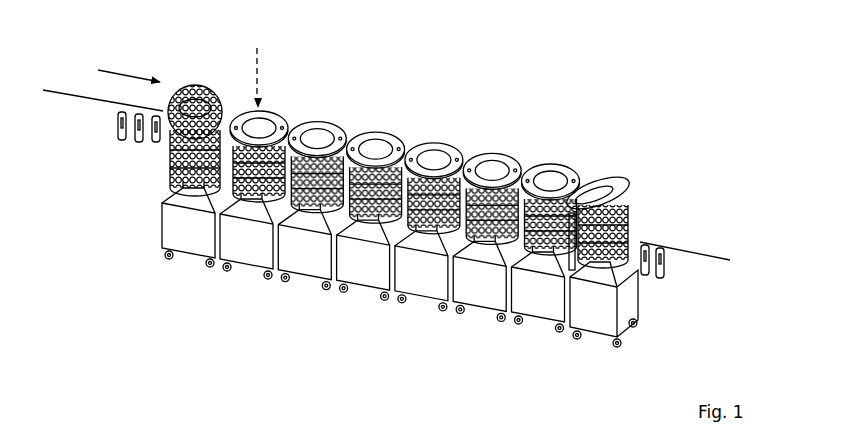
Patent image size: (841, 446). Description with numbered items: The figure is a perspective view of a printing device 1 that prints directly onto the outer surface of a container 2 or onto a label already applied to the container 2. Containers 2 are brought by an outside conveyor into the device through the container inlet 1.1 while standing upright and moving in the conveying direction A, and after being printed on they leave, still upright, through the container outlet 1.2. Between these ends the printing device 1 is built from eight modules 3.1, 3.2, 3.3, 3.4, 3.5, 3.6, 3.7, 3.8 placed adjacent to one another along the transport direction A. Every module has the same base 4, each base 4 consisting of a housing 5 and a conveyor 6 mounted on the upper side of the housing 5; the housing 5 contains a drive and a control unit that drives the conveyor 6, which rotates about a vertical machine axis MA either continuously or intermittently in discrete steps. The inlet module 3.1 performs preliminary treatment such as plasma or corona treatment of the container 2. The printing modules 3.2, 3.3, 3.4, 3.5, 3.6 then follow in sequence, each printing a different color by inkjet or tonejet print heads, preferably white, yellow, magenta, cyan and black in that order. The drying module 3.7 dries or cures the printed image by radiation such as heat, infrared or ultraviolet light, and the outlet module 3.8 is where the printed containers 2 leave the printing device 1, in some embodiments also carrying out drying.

The printing device 1 is at (597, 100).
The container inlet 1.1 is at (125, 156).
The container outlet 1.2 is at (654, 290).
The container 2 is at (118, 128).
The inlet module 3.1 is at (193, 83).
The printing module 3.2 is at (264, 106).
The printing module 3.3 is at (319, 119).
The printing module 3.4 is at (378, 128).
The printing module 3.5 is at (441, 139).
The printing module 3.6 is at (496, 152).
The drying module 3.7 is at (554, 164).
The outlet module 3.8 is at (615, 177).
The base 4 is at (170, 187).
The housing 5 is at (178, 233).
The conveyor 6 is at (212, 92).
The conveying direction A is at (129, 68).
The machine axis MA is at (251, 66).